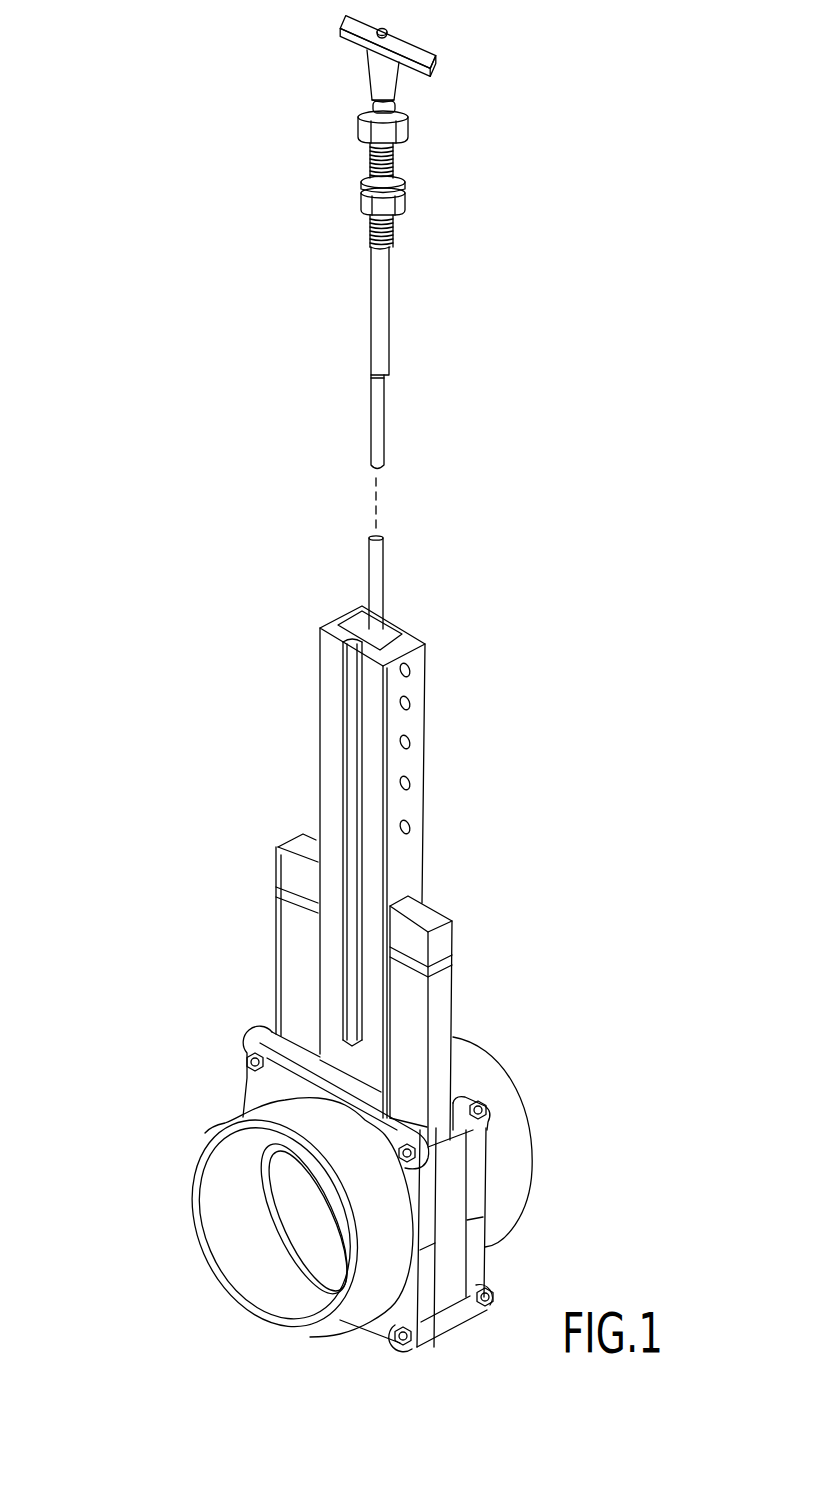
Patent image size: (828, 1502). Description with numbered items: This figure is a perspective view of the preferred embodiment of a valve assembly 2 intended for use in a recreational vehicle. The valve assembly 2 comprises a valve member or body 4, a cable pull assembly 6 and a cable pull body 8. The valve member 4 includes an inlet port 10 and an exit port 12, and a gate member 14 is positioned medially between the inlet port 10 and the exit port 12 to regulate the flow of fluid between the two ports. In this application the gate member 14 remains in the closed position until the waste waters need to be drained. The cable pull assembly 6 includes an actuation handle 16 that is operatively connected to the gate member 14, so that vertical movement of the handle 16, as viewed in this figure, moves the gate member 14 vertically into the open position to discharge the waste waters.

The valve assembly 2 is at (540, 786).
The valve member 4 is at (447, 1001).
The cable pull assembly 6 is at (398, 266).
The cable pull body 8 is at (416, 716).
The inlet port 10 is at (520, 1120).
The exit port 12 is at (223, 1163).
The gate member 14 is at (317, 1200).
The actuation handle 16 is at (400, 47).